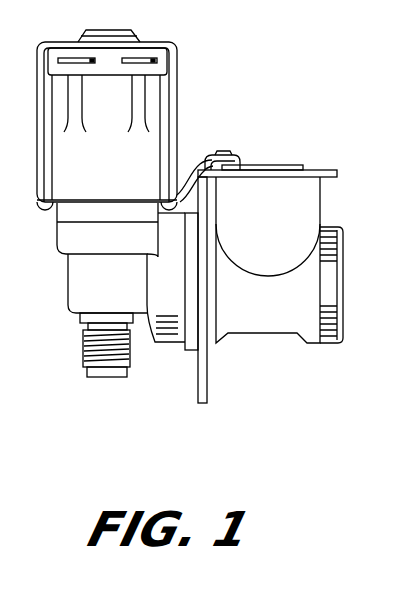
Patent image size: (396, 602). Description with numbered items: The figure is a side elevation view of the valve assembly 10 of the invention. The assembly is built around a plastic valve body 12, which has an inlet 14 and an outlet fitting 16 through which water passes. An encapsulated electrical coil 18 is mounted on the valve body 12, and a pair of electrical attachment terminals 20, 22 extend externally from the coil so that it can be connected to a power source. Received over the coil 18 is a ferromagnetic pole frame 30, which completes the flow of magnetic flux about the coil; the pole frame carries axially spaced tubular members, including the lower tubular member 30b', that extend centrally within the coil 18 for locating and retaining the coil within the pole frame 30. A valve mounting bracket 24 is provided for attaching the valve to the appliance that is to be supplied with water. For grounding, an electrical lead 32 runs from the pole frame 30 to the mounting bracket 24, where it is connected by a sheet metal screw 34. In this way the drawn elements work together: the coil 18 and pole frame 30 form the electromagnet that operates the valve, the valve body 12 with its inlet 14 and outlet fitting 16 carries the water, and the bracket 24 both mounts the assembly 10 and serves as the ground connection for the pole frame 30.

The valve assembly 10 is at (186, 148).
The plastic valve body 12 is at (68, 290).
The inlet 14 is at (266, 166).
The outlet fitting 16 is at (108, 378).
The encapsulated electrical coil 18 is at (118, 184).
The electrical attachment terminal 20 is at (68, 58).
The electrical attachment terminal 22 is at (147, 58).
The valve mounting bracket 24 is at (207, 387).
The ferro magnetic pole frame 30 is at (178, 73).
The lower tubular member 30b' is at (106, 137).
The electrical lead 32 is at (187, 193).
The sheet metal screw 34 is at (225, 155).